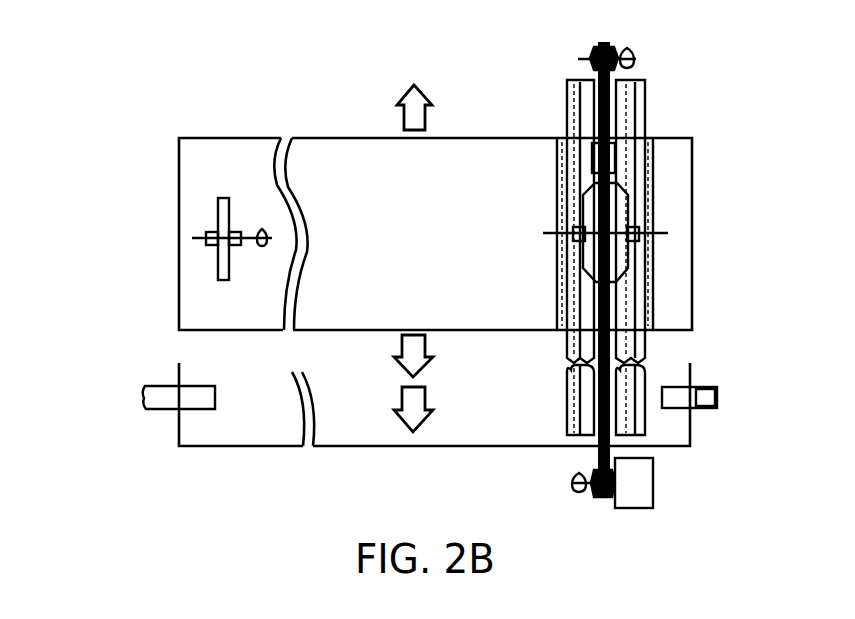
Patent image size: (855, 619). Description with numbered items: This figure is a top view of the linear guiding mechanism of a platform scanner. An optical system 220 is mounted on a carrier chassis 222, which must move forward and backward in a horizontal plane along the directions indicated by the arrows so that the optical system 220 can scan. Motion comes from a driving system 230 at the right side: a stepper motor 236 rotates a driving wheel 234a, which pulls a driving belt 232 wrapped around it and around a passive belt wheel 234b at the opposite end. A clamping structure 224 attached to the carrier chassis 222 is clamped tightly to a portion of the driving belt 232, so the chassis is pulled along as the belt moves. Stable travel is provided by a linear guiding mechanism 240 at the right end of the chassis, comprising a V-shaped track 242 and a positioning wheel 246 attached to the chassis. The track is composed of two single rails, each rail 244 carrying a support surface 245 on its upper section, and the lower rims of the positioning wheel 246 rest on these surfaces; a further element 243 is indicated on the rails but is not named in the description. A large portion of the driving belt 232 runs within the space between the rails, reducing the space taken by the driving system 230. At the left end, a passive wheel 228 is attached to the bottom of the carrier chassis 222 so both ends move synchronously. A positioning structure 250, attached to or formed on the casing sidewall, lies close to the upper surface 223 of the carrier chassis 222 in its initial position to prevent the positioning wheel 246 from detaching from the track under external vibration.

The optical system 220 is at (197, 118).
The carrier chassis 222 is at (214, 148).
The upper surface 223 is at (259, 150).
The clamping structure 224 is at (612, 152).
The passive wheel 228 is at (220, 268).
The driving system 230 is at (681, 293).
The driving belt 232 is at (653, 461).
The driving wheel 234a is at (627, 474).
The passive belt wheel 234b is at (612, 48).
The stepper motor 236 is at (647, 500).
The linear guiding mechanism 240 is at (628, 251).
The V-shaped track 242 is at (617, 90).
The left rail 243 is at (592, 103).
The single rail 244 is at (625, 108).
The support surface 245 is at (632, 119).
The positioning wheel 246 is at (625, 220).
The positioning structure 250 is at (163, 397).